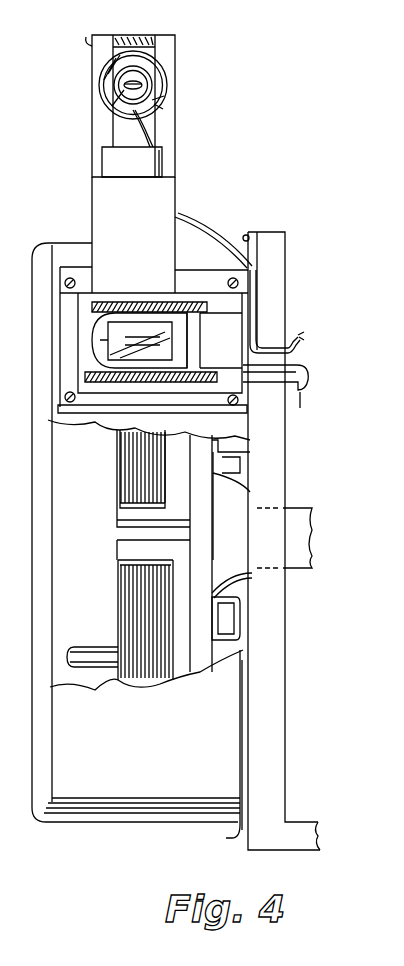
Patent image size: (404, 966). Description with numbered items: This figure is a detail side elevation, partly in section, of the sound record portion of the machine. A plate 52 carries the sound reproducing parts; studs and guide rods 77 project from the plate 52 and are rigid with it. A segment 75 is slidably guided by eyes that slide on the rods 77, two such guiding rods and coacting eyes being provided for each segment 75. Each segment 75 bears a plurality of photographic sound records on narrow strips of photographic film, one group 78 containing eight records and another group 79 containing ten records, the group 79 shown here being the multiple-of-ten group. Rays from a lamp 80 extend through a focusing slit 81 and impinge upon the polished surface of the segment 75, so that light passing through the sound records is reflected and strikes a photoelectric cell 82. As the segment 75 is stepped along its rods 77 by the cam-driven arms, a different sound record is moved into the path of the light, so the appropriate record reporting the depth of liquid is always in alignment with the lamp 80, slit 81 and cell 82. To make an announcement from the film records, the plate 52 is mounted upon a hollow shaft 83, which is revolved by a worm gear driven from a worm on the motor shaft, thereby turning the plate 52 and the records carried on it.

The plate 52 is at (205, 532).
The segment 75 is at (110, 514).
The rod 77 is at (99, 638).
The group of sound records 78 is at (125, 482).
The group of sound records 79 is at (132, 590).
The lamp 80 is at (162, 82).
The focusing slit 81 is at (163, 160).
The photoelectric cell 82 is at (135, 322).
The hollow shaft 83 is at (310, 522).